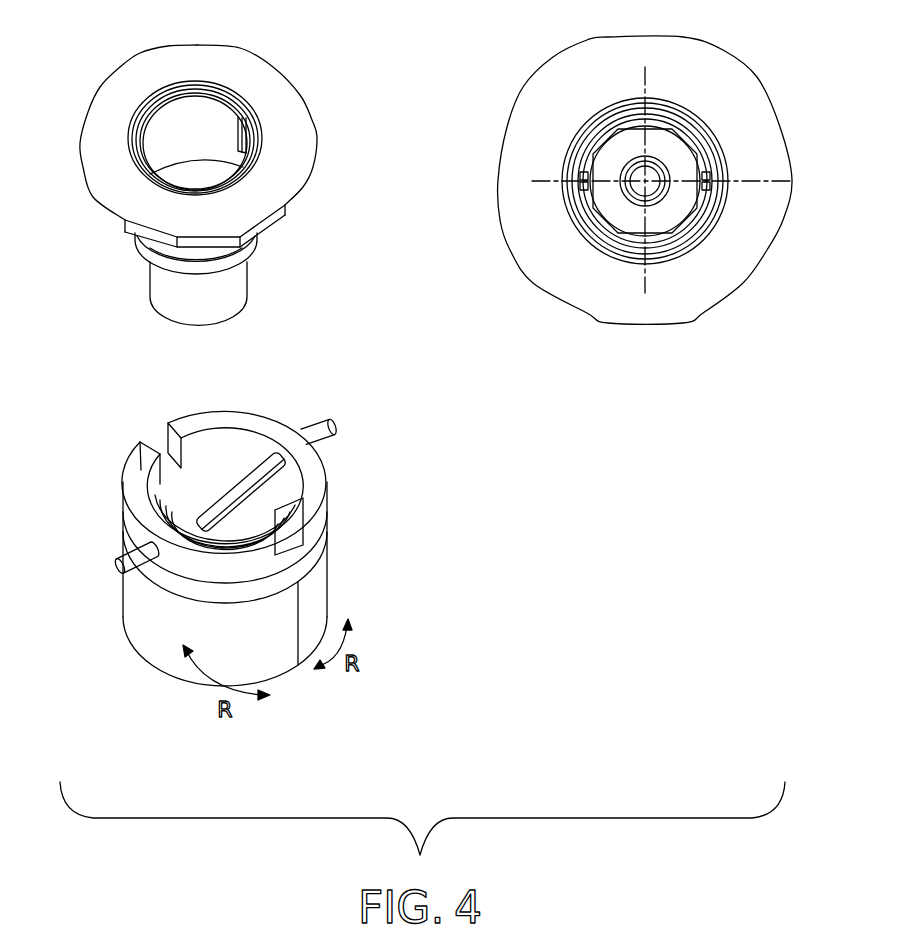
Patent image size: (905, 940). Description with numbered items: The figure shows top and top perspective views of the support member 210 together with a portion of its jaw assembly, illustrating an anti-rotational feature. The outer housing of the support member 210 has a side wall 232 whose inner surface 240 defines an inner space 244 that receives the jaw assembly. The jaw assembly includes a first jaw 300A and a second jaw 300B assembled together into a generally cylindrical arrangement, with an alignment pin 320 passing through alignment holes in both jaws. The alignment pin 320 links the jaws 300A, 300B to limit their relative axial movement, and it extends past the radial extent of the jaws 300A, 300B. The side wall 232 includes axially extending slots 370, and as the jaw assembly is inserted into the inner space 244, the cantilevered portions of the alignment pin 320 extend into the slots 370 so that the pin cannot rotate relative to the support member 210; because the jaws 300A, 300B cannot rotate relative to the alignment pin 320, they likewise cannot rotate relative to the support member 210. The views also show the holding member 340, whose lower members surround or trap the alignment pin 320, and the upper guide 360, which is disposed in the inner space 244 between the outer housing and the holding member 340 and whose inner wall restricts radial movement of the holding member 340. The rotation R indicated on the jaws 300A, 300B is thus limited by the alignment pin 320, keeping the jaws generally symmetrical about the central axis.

The support member 210 is at (270, 65).
The side wall 232 is at (157, 252).
The inner surface 240 is at (190, 135).
The inner space 244 is at (153, 172).
The first jaw 300A is at (133, 618).
The second jaw 300B is at (313, 598).
The alignment pin 320 is at (340, 425).
The holding member 340 is at (677, 152).
The upper guide 360 is at (662, 122).
The slot 370 is at (252, 113).